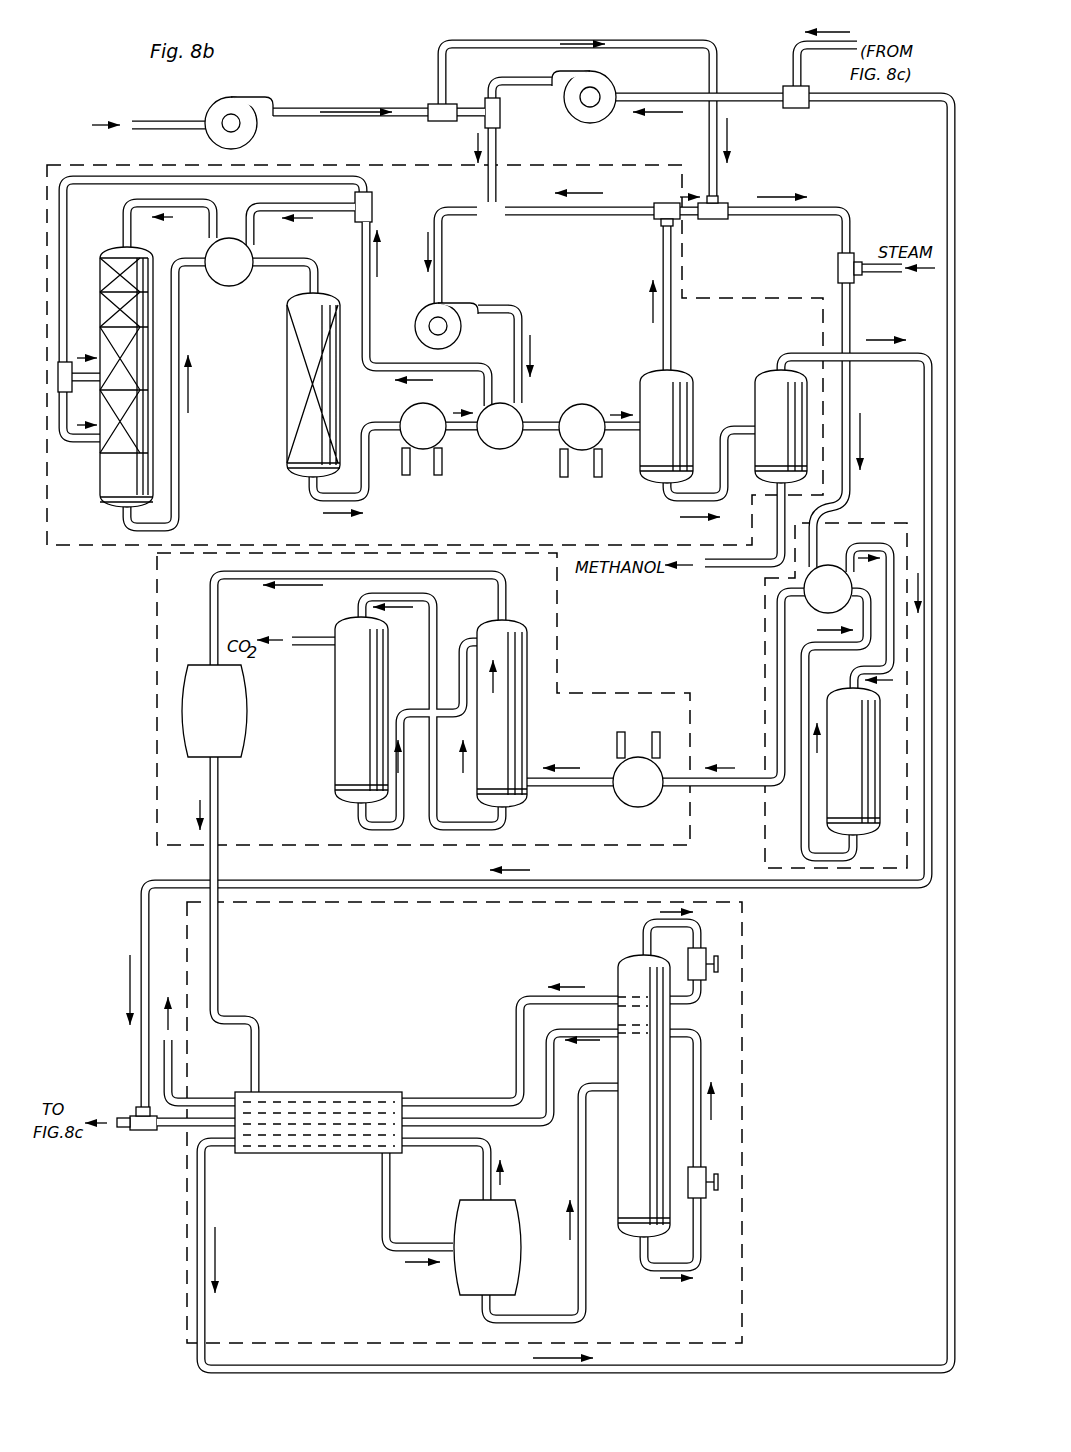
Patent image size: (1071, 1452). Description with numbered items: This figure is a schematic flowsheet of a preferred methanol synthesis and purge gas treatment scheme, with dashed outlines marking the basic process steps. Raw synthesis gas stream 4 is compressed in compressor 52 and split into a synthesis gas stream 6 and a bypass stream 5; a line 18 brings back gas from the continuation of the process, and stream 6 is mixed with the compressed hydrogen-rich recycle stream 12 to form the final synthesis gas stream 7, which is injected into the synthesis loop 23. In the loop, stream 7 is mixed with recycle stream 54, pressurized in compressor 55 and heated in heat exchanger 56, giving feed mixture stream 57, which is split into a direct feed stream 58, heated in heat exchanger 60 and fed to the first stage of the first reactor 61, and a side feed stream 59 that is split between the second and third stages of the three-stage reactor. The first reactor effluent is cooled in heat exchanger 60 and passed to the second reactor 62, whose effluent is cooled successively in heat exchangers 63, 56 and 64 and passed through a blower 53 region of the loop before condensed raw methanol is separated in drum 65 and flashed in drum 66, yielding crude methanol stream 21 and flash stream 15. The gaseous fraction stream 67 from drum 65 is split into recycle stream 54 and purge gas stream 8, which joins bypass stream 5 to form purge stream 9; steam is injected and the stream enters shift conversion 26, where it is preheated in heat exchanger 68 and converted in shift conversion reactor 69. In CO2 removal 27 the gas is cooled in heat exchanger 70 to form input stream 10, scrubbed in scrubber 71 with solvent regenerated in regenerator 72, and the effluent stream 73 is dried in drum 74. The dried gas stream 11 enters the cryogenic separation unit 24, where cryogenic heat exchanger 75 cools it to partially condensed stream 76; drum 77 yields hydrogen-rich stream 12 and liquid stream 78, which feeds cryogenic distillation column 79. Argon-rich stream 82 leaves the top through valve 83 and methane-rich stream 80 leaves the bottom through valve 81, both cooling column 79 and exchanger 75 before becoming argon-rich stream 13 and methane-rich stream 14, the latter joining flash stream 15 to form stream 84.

The raw synthesis gas stream 4 is at (150, 118).
The bypass stream 5 is at (483, 38).
The synthesis gas stream 6 is at (465, 122).
The final synthesis gas stream 7 is at (500, 152).
The purge gas stream 8 is at (693, 219).
The purge stream 9 is at (742, 205).
The input stream 10 is at (585, 788).
The effluent dried gas stream 11 is at (217, 833).
The hydrogen-rich stream 12 is at (897, 105).
The argon-rich stream 13 is at (198, 1100).
The methane-rich stream 14 is at (183, 1128).
The flash stream 15 is at (902, 358).
The line from FIG. 8c 18 is at (855, 43).
The crude methanol stream 21 is at (737, 575).
The synthesis loop 23 is at (115, 553).
The cryogenic separation unit 24 is at (180, 1253).
The shift conversion 26 is at (762, 620).
The CO2 removal 27 is at (562, 656).
The compressor 52 is at (250, 98).
The blower 53 is at (617, 83).
The recycle stream 54 is at (568, 217).
The compressor 55 is at (463, 297).
The heat exchanger 56 is at (503, 452).
The feed mixture stream 57 is at (375, 228).
The direct feed stream 58 is at (342, 210).
The side feed stream 59 is at (372, 193).
The heat exchanger 60 is at (253, 257).
The first reactor 61 is at (103, 247).
The second reactor 62 is at (287, 407).
The heat exchanger 63 is at (428, 450).
The heat exchanger 64 is at (580, 405).
The drum 65 is at (695, 397).
The drum 66 is at (763, 372).
The gaseous fraction stream 67 is at (673, 345).
The heat exchanger 68 is at (823, 565).
The shift conversion reactor 69 is at (827, 813).
The heat exchanger 70 is at (660, 803).
The scrubber 71 is at (520, 618).
The regenerator 72 is at (390, 665).
The effluent stream 73 is at (250, 580).
The drum 74 is at (247, 740).
The cryogenic heat exchanger 75 is at (325, 1092).
The partially condensed stream 76 is at (377, 1218).
The drum 77 is at (510, 1203).
The liquid fraction stream 78 is at (587, 1293).
The cryogenic distillation column 79 is at (670, 1057).
The methane-rich stream 80 is at (703, 1262).
The valve 81 is at (707, 1167).
The argon-rich stream 82 is at (640, 938).
The valve 83 is at (708, 952).
The stream 84 is at (125, 1130).